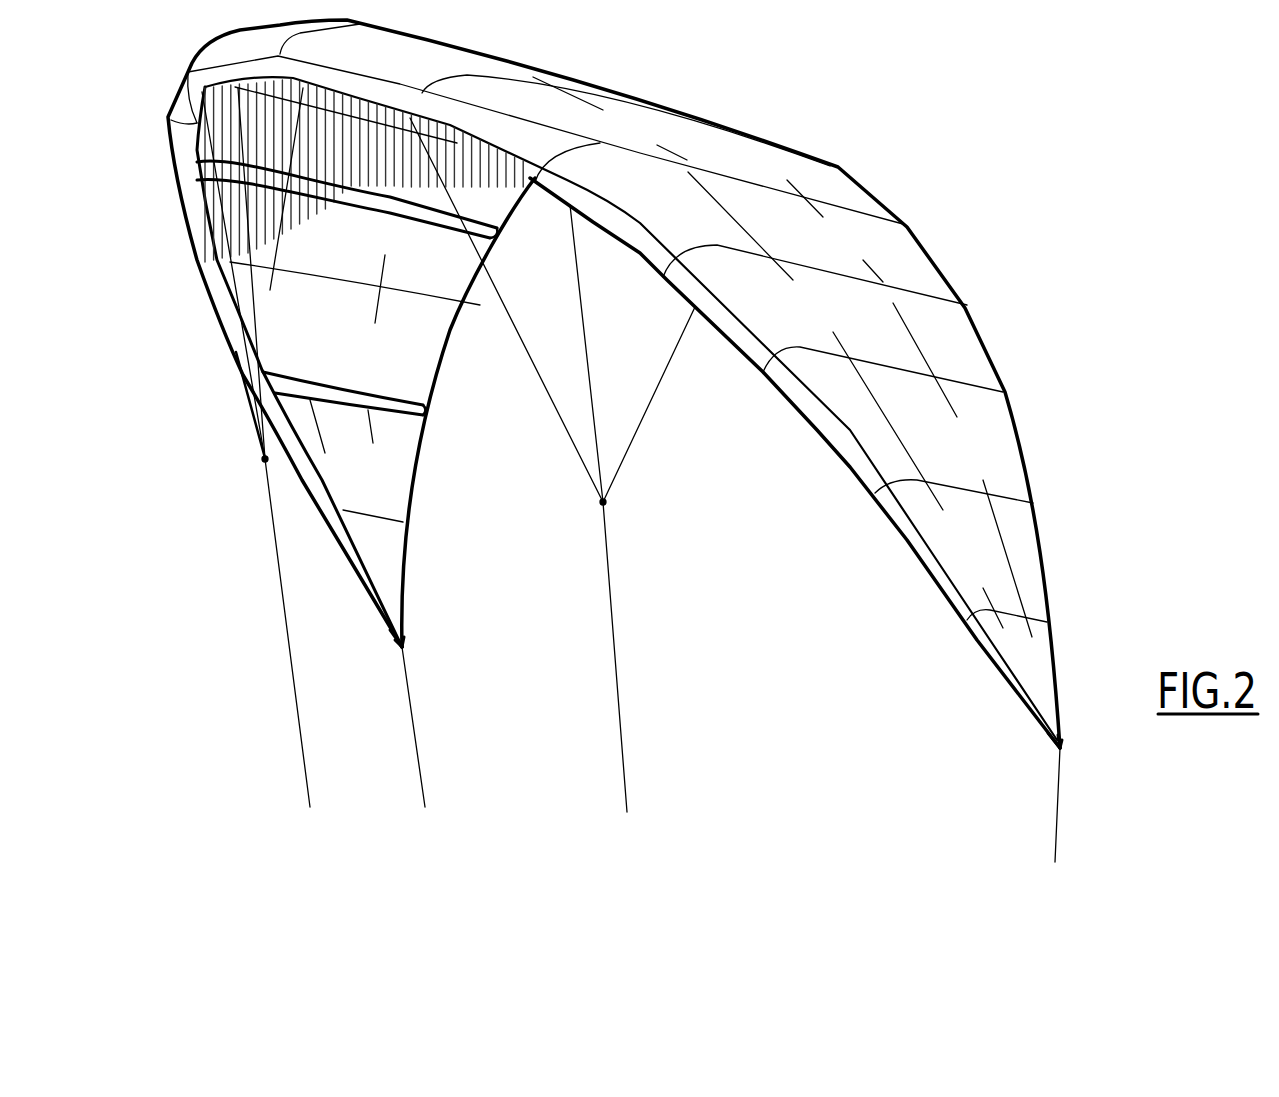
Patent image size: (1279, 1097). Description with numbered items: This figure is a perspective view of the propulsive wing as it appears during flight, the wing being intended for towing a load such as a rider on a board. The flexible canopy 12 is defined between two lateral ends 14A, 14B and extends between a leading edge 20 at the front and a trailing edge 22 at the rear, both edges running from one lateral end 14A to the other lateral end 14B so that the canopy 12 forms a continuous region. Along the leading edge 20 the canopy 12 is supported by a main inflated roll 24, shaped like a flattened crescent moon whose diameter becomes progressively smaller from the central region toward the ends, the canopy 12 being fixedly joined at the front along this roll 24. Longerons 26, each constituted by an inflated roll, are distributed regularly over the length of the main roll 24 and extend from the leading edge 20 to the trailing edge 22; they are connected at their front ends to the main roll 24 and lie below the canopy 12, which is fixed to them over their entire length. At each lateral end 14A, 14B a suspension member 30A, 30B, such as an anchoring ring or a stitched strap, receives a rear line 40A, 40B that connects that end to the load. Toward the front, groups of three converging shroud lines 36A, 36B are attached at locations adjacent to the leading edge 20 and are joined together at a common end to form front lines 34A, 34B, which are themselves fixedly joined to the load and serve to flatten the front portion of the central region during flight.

The canopy 12 is at (737, 148).
The lateral end 14A is at (393, 650).
The lateral end 14B is at (1070, 754).
The leading edge 20 is at (652, 258).
The trailing edge 22 is at (875, 192).
The main inflated roll 24 is at (535, 160).
The longerons 26 is at (390, 213).
The suspension member 30A is at (405, 650).
The suspension member 30B is at (1055, 752).
The front line 34A is at (283, 613).
The front line 34B is at (613, 640).
The shroud lines 36A is at (263, 348).
The shroud lines 36B is at (595, 417).
The rear line 40A is at (422, 770).
The rear line 40B is at (1055, 835).